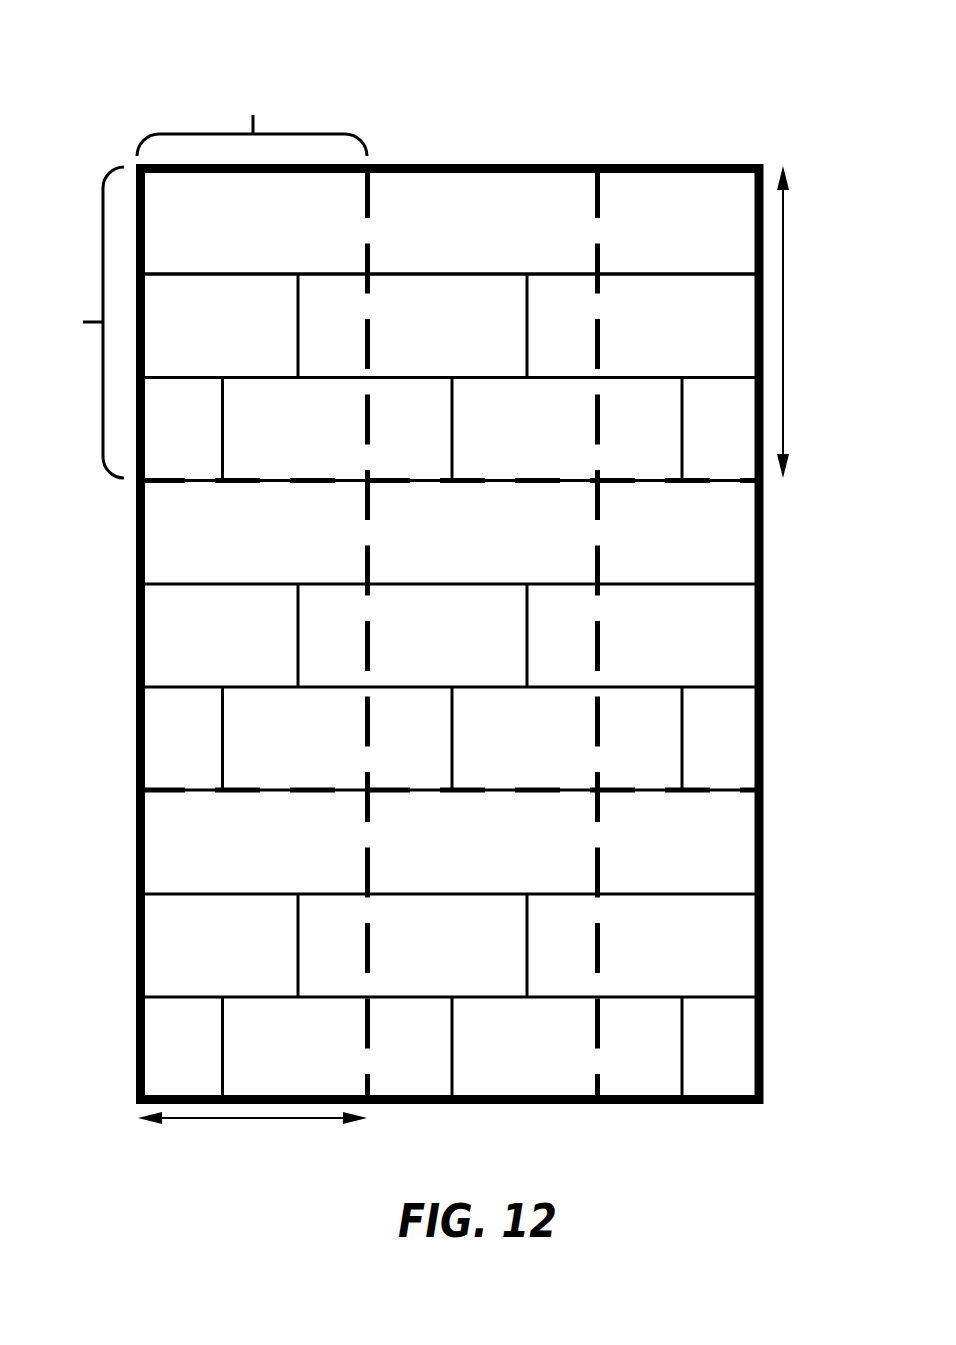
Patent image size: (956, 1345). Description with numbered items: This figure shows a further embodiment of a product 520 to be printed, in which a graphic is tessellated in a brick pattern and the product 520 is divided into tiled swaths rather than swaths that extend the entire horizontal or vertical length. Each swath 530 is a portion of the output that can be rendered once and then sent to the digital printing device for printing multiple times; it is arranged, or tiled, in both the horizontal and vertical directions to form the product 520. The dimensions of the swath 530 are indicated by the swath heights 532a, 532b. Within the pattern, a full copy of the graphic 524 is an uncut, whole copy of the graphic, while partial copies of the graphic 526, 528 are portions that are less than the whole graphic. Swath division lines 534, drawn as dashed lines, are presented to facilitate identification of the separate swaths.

The product 520 is at (168, 74).
The full copy of the graphic 524 is at (425, 183).
The partial copy of the graphic 526 is at (172, 920).
The partial copy of the graphic 528 is at (172, 1025).
The swath 530 is at (197, 282).
The swath height 532a is at (252, 1132).
The swath height 532b is at (811, 322).
The swath division lines 534 is at (363, 513).